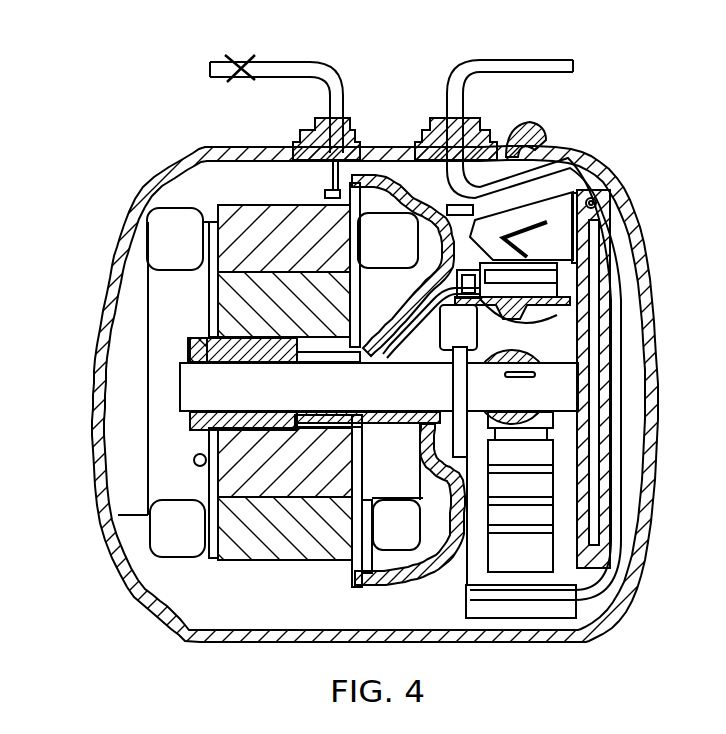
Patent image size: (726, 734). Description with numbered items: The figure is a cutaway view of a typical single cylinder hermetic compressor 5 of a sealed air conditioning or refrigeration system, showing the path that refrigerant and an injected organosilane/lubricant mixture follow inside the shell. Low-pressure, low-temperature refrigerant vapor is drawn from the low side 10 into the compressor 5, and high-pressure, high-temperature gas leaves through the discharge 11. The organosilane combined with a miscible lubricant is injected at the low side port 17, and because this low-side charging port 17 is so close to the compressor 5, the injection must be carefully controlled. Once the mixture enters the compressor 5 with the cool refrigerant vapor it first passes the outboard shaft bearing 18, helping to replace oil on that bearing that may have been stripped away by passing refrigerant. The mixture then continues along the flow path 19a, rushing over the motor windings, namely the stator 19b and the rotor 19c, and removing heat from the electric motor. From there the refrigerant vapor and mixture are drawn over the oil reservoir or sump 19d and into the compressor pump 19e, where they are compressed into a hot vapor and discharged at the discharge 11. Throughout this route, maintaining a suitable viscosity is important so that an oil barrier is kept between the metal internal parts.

The compressor 5 is at (160, 93).
The low side 10 is at (210, 68).
The discharge 11 is at (576, 65).
The low side port 17 is at (252, 80).
The outboard shaft bearing 18 is at (173, 384).
The flow path 19a is at (366, 172).
The stator 19b is at (287, 220).
The rotor 19c is at (233, 307).
The oil reservoir (sump) 19d is at (316, 505).
The compressor pump 19e is at (503, 373).